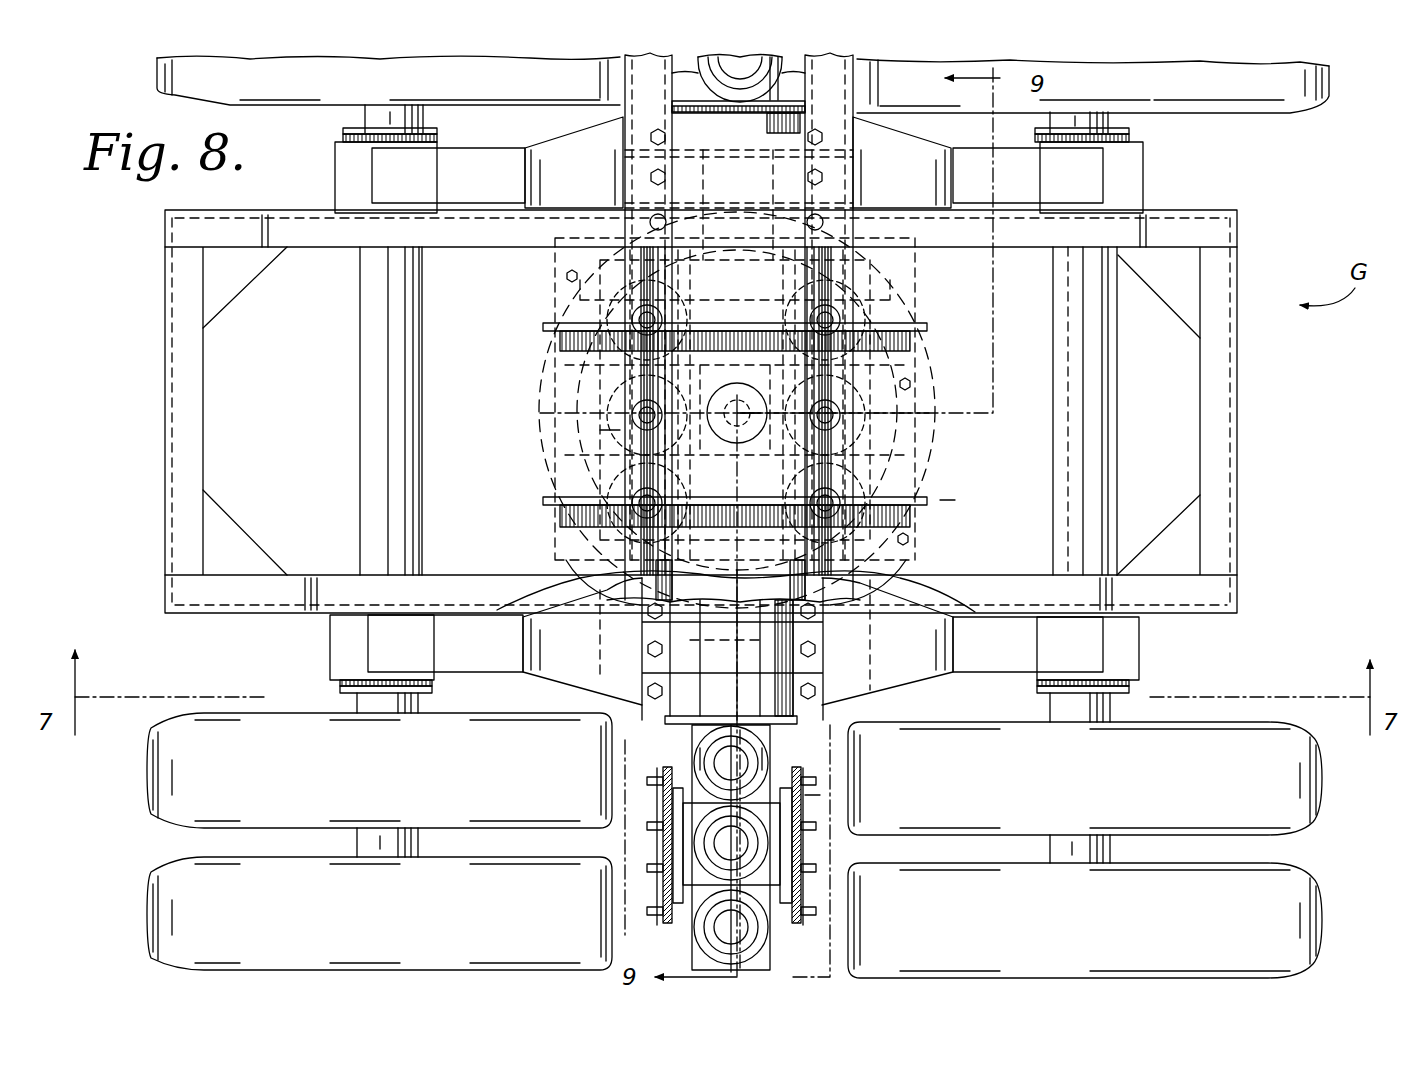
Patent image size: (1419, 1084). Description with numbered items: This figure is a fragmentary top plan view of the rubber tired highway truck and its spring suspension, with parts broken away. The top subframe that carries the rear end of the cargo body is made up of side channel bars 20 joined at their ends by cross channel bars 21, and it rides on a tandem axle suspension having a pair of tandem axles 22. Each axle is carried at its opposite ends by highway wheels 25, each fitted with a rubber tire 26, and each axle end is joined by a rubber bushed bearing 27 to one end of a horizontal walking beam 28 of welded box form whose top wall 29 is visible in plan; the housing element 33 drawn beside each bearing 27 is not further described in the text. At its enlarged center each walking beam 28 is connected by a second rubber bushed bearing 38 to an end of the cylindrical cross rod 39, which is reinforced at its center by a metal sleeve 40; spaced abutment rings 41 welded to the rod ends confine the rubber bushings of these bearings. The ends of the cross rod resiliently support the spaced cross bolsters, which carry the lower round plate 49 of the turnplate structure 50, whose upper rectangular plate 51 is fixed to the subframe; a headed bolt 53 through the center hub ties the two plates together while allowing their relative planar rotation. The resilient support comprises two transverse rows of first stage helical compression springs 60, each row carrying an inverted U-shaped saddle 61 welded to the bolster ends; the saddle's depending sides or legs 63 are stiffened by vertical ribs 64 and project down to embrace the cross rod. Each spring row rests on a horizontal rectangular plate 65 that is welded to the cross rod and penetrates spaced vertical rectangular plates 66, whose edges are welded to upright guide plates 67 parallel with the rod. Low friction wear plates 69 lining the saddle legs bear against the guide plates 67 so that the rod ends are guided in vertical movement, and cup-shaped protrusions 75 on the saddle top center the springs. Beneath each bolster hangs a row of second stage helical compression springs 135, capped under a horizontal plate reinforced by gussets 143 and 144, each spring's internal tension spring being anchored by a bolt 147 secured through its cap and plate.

The side channel bars 20 is at (306, 243).
The cross channel bars 21 is at (175, 393).
The tandem axles 22 is at (372, 402).
The highway wheels 25 is at (175, 70).
The rubber tire 26 is at (378, 72).
The rubber bushed bearing 27 is at (330, 150).
The walking beam 28 is at (545, 150).
The top wall 29 is at (492, 178).
The bearing housing 33 is at (340, 170).
The rubber bushed bearing 38 is at (825, 188).
The cross rod 39 is at (640, 640).
The metal sleeve 40 is at (722, 410).
The abutment rings 41 is at (588, 745).
The lower round plate 49 is at (937, 434).
The turnplate structure 50 is at (572, 297).
The upper rectangular plate 51 is at (560, 412).
The headed bolt 53 is at (735, 445).
The first stage helical compression springs 60 is at (748, 935).
The saddle 61 is at (822, 890).
The sides or legs 63 is at (800, 805).
The vertical ribs 64 is at (658, 905).
The horizontal rectangular plate 65 is at (850, 95).
The vertical rectangular plates 66 is at (665, 797).
The guide plates 67 is at (806, 778).
The low friction wear plates 69 is at (812, 797).
The cup-shaped protrusions 75 is at (862, 945).
The second stage helical compression springs 135 is at (610, 350).
The gussets 143 is at (568, 272).
The gussets 144 is at (590, 243).
The bolt 147 is at (600, 432).